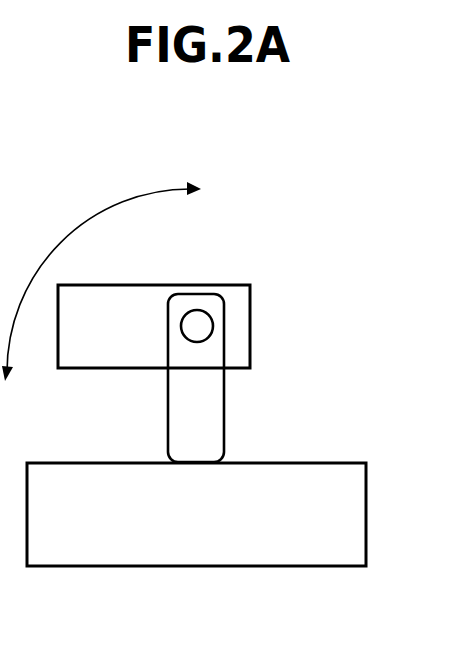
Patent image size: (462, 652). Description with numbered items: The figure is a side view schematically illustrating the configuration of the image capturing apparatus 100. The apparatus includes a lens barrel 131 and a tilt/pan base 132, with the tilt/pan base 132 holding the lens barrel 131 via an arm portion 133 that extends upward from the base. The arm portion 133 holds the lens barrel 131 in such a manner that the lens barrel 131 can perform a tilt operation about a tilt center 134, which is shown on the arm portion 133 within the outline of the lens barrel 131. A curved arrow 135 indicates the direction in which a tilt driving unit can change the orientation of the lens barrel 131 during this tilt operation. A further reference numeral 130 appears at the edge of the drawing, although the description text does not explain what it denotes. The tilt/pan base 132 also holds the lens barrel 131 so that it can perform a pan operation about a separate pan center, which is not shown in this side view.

The image capturing apparatus 100 is at (302, 176).
The mounting unit 130 is at (453, 294).
The lens barrel 131 is at (229, 284).
The tilt/pan base 132 is at (367, 510).
The arm portion 133 is at (225, 415).
The tilt center 134 is at (213, 320).
The arrow 135 is at (90, 219).